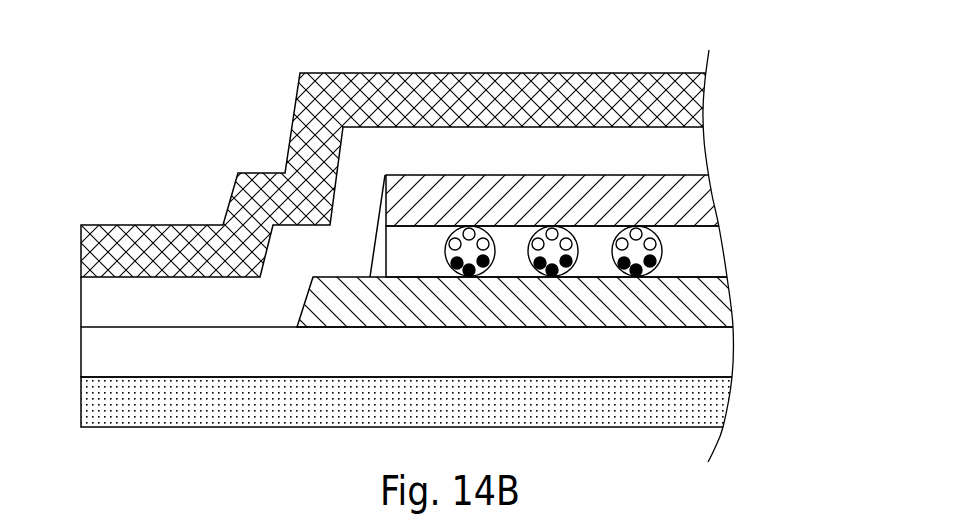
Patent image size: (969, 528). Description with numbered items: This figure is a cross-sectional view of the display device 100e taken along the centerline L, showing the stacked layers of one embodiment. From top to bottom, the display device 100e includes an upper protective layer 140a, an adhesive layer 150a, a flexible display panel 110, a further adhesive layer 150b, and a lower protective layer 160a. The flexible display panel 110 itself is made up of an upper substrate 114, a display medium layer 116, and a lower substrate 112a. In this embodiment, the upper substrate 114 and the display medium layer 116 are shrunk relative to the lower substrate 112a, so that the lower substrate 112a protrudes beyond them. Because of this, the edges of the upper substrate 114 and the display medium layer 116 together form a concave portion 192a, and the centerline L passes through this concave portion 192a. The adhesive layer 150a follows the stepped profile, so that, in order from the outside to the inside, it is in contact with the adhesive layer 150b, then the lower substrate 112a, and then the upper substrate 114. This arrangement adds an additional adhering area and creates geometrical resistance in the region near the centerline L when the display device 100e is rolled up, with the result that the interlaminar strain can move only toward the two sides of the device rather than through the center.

The display device 100e is at (112, 62).
The upper protective layer 140a is at (703, 100).
The adhesive layer 150a is at (697, 150).
The concave portion 192a is at (380, 232).
The flexible display panel 110 is at (585, 251).
The upper substrate 114 is at (698, 202).
The display medium layer 116 is at (712, 252).
The lower substrate 112a is at (553, 302).
The adhesive layer 150b is at (723, 352).
The lower protective layer 160a is at (713, 407).